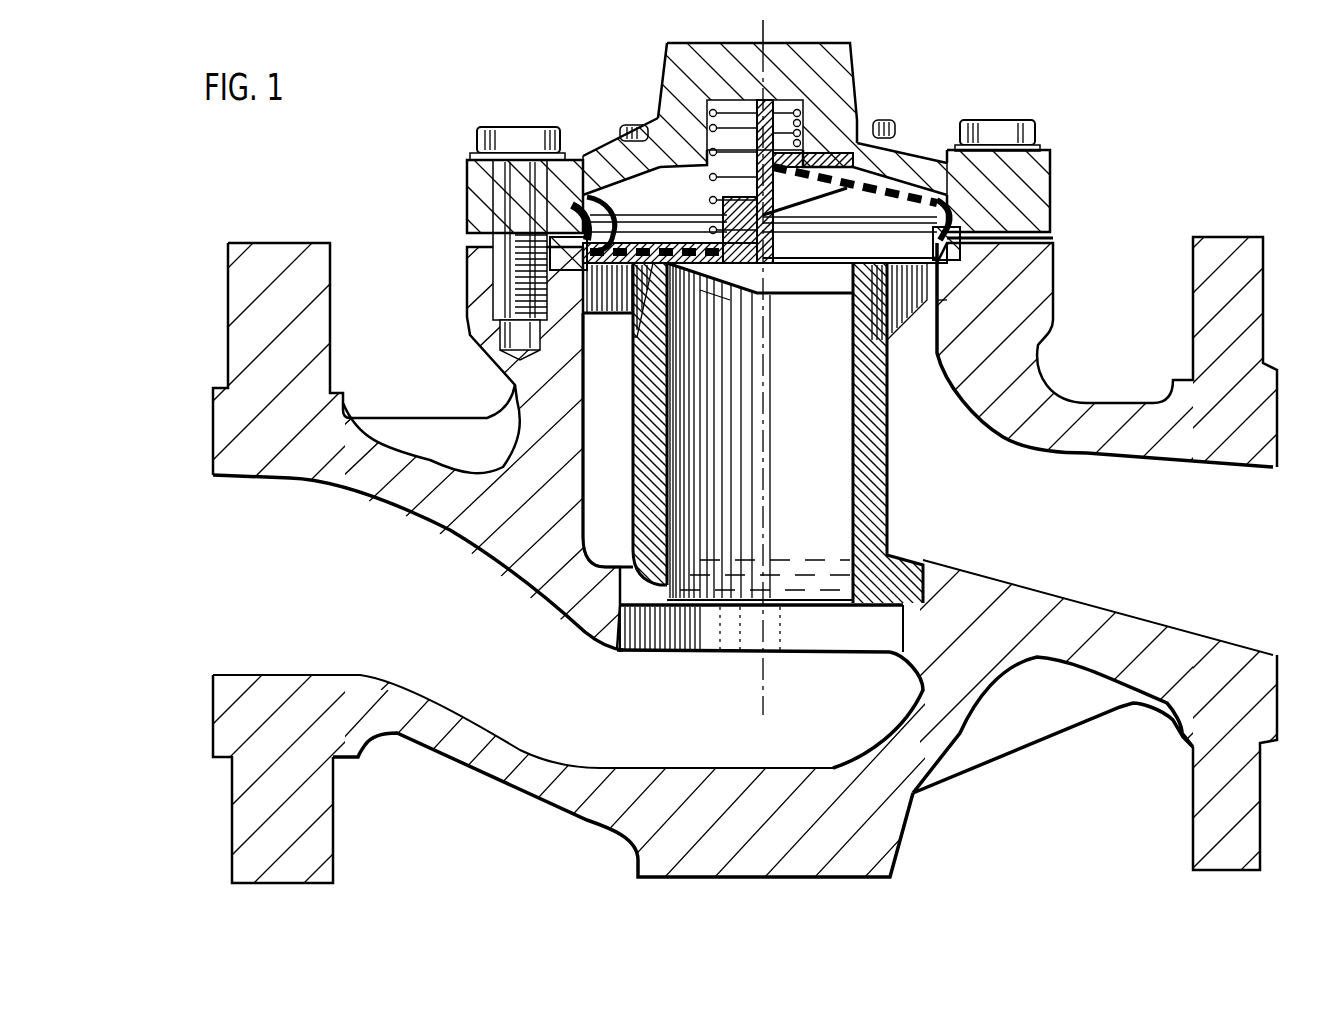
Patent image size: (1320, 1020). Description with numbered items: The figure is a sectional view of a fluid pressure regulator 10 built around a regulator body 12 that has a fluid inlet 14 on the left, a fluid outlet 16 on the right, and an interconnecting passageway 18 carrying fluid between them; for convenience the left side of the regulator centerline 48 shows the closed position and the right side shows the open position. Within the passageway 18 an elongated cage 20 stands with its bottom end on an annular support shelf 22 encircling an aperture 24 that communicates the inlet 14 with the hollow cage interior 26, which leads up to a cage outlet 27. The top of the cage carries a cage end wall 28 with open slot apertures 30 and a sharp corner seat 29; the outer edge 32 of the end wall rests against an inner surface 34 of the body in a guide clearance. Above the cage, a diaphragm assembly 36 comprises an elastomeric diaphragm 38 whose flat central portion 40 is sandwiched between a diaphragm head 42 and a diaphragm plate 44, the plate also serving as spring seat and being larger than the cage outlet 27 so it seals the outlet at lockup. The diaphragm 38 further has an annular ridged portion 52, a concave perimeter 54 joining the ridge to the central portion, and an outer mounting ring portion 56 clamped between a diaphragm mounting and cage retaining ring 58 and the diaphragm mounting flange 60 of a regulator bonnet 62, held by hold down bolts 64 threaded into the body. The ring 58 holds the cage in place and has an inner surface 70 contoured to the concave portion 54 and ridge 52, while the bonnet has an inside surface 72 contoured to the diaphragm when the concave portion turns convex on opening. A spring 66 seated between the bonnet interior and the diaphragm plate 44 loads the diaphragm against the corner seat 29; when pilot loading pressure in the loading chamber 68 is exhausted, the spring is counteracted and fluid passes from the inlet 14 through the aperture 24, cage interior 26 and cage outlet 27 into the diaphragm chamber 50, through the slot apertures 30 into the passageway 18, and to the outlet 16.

The fluid pressure regulator 10 is at (372, 203).
The regulator body 12 is at (398, 416).
The fluid inlet 14 is at (255, 575).
The fluid outlet 16 is at (1223, 522).
The interconnecting passageway 18 is at (605, 445).
The elongated cage 20 is at (640, 497).
The annular support shelf 22 is at (632, 660).
The aperture 24 is at (790, 640).
The hollow cage interior 26 is at (812, 452).
The cage outlet 27 is at (773, 280).
The cage end wall 28 is at (845, 265).
The corner seat 29 is at (848, 262).
The open slot apertures 30 is at (607, 318).
The outer edge 32 is at (943, 307).
The inner surface 34 is at (533, 283).
The diaphragm assembly 36 is at (667, 97).
The elastomeric diaphragm 38 is at (905, 177).
The central portion 40 is at (710, 300).
The diaphragm head 42 is at (812, 295).
The diaphragm plate 44 is at (708, 211).
The regulator centerline 48 is at (763, 538).
The diaphragm chamber 50 is at (793, 246).
The annular ridged portion 52 is at (587, 205).
The concave perimeter 54 is at (605, 180).
The outer mounting ring portion 56 is at (553, 232).
The diaphragm mounting and cage retaining ring 58 is at (1053, 243).
The diaphragm mounting flange 60 is at (1030, 168).
The regulator bonnet 62 is at (833, 63).
The hold down bolts 64 is at (483, 127).
The spring 66 is at (703, 213).
The loading chamber 68 is at (650, 213).
The inner surface 70 is at (1053, 280).
The inside surface 72 is at (567, 217).